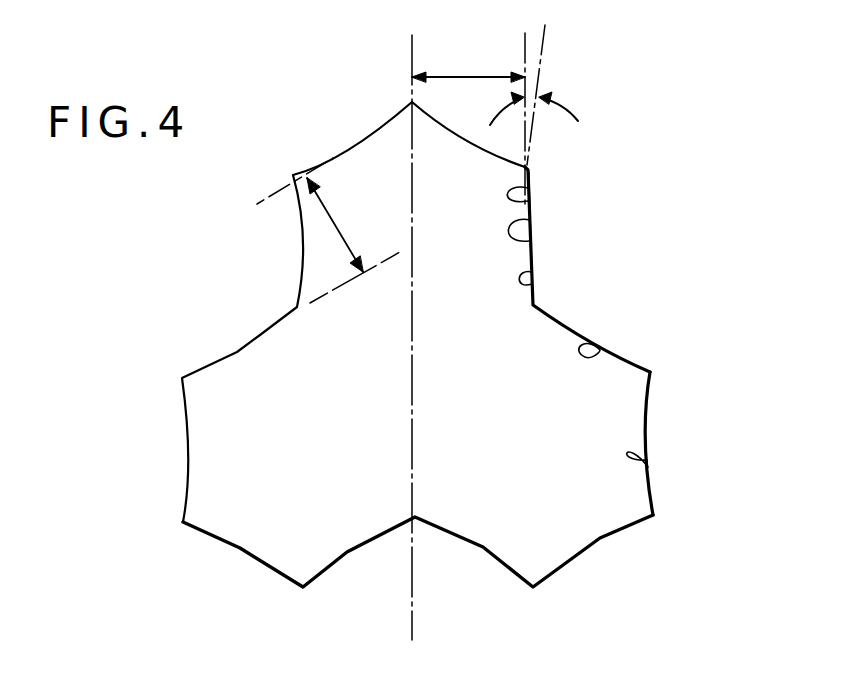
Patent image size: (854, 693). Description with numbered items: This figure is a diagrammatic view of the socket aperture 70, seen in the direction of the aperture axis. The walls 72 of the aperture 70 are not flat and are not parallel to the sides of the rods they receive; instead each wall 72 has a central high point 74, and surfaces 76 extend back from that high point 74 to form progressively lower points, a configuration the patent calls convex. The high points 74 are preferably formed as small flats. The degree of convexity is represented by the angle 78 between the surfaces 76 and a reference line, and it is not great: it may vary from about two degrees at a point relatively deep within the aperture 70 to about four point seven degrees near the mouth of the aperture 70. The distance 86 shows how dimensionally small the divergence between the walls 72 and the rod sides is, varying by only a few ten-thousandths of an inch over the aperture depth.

The socket aperture 70 is at (487, 366).
The aperture walls 72 is at (600, 350).
The central high point 74 is at (532, 222).
The surfaces 76 is at (530, 184).
The angle 78 is at (537, 88).
The distance 86 is at (490, 38).